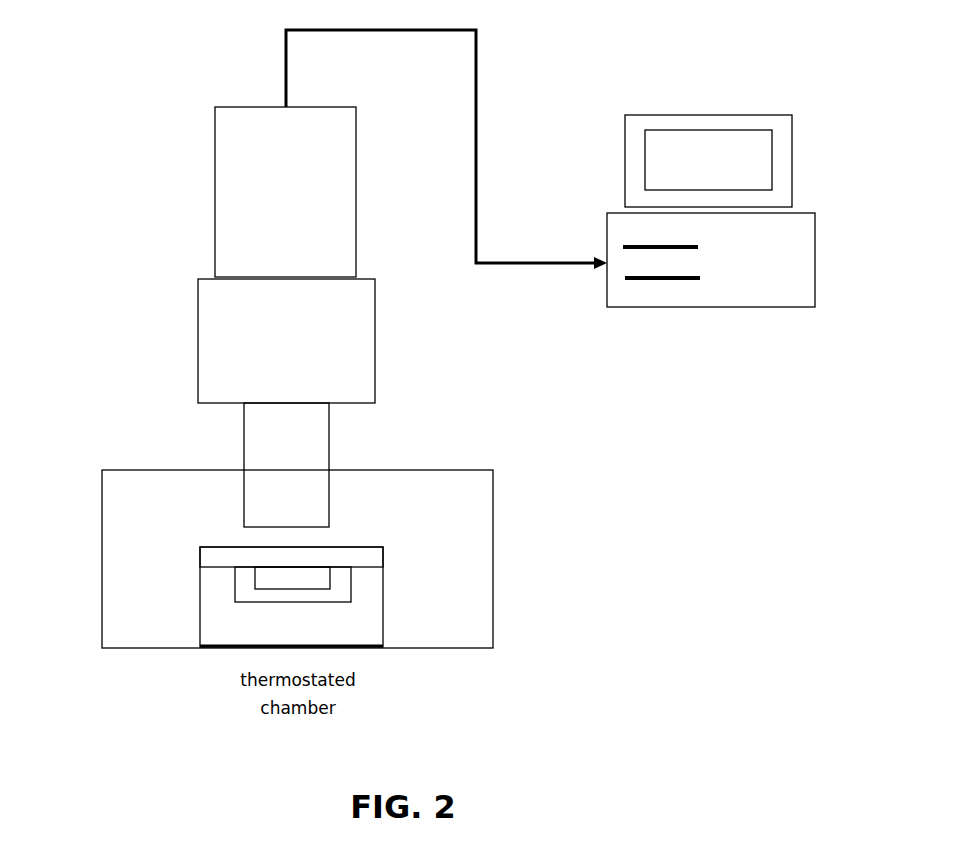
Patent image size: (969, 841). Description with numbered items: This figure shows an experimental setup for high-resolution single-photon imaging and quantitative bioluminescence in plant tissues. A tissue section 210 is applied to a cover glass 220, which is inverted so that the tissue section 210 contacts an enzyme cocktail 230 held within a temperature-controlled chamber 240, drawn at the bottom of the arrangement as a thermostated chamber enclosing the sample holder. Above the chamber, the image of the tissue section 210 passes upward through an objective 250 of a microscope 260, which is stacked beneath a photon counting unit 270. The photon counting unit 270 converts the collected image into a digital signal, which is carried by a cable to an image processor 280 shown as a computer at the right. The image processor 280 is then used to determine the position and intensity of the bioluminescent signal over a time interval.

The tissue section 210 is at (295, 578).
The cover glass 220 is at (368, 558).
The enzyme cocktail 230 is at (340, 590).
The temperature-controlled chamber 240 is at (347, 631).
The objective 250 is at (117, 442).
The microscope 260 is at (220, 305).
The photon counting unit 270 is at (237, 131).
The image processor 280 is at (678, 78).